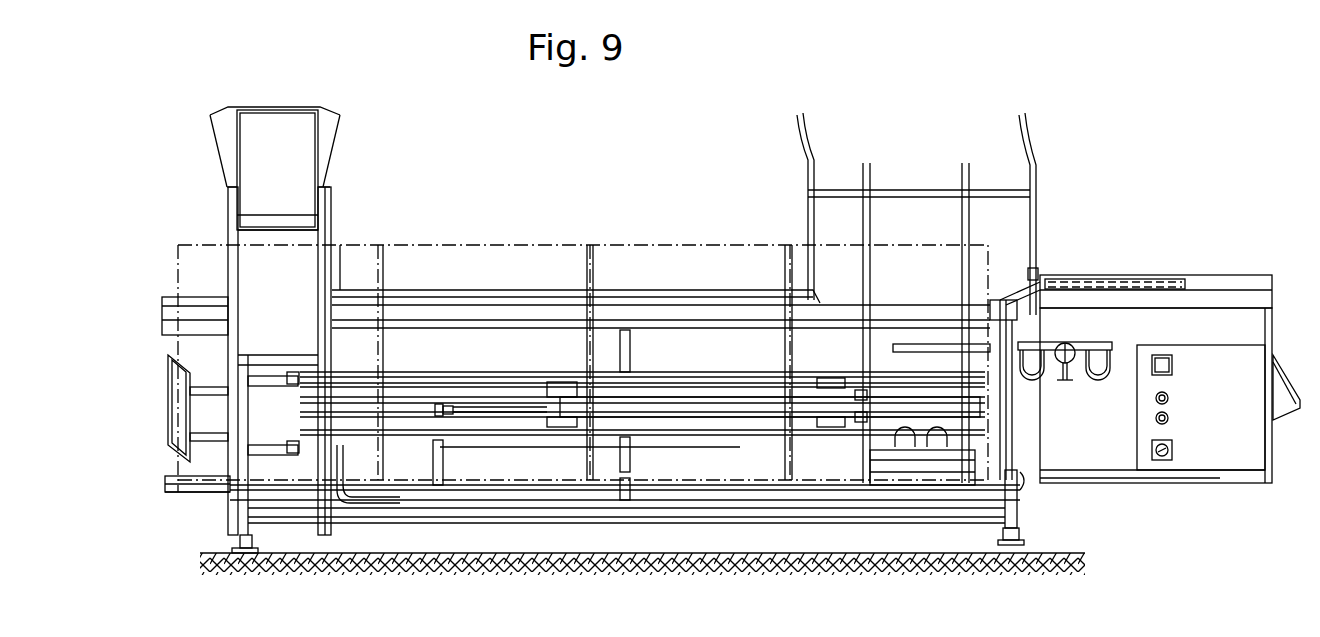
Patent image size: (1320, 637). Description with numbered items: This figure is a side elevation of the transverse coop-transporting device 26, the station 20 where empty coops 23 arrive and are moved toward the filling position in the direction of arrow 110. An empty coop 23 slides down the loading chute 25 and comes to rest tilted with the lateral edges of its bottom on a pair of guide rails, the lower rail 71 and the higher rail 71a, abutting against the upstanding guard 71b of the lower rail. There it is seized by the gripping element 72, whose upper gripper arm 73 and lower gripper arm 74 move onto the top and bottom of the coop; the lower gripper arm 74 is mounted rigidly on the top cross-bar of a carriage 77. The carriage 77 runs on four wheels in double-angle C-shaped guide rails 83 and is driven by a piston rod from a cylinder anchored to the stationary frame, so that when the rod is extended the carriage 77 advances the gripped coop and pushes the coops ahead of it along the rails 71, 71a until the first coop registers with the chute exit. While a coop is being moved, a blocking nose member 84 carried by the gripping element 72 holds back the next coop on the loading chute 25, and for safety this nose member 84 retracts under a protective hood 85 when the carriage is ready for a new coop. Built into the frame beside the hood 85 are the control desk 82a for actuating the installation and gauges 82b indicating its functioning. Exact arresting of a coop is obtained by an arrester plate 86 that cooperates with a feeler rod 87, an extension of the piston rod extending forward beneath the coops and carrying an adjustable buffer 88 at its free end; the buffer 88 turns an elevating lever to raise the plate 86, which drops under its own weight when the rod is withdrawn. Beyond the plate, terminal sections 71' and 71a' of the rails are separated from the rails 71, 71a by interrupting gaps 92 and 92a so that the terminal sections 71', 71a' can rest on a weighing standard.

The loading hopper station 20 is at (203, 178).
The empty coop 23 is at (365, 245).
The loading chute 25 is at (1030, 210).
The transverse coop-transporting device 26 is at (684, 520).
The lower rail 71 is at (625, 507).
The terminal section of rail 71 71' is at (176, 482).
The upper rail 71a is at (661, 290).
The terminal section of rail 71a 71a' is at (175, 316).
The upstanding guard 71b is at (186, 494).
The gripping element 72 is at (1008, 388).
The upper gripper arm 73 is at (932, 343).
The lower gripper arm 74 is at (1000, 408).
The carriage 77 is at (675, 385).
The control desk 82a is at (1205, 453).
The gauges 82b is at (1105, 333).
The guide rails 83 is at (562, 385).
The blocking nose member 84 is at (1110, 283).
The protective hood 85 is at (1231, 278).
The arrester plate 86 is at (174, 420).
The feeler rod 87 is at (509, 408).
The adjustable buffer 88 is at (433, 410).
The interrupting gap 92 is at (376, 478).
The interrupting gap 92a is at (383, 302).
The direction of coop conveyance 110 is at (665, 200).